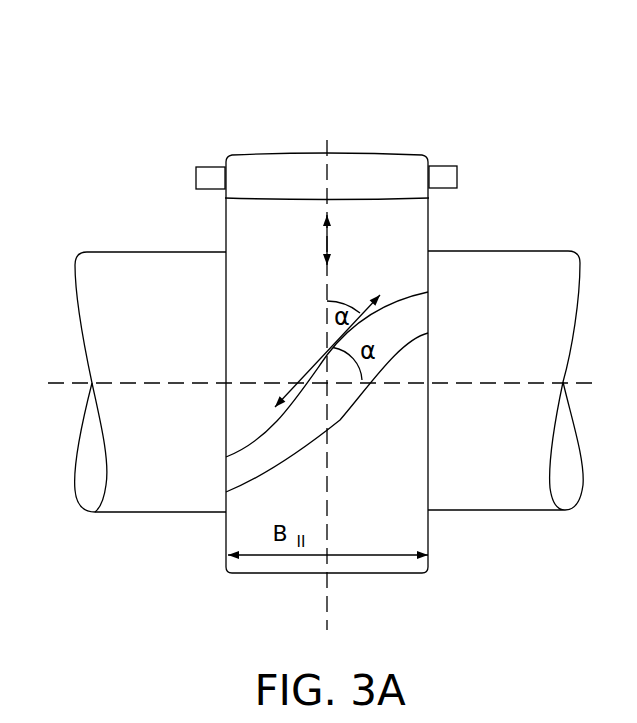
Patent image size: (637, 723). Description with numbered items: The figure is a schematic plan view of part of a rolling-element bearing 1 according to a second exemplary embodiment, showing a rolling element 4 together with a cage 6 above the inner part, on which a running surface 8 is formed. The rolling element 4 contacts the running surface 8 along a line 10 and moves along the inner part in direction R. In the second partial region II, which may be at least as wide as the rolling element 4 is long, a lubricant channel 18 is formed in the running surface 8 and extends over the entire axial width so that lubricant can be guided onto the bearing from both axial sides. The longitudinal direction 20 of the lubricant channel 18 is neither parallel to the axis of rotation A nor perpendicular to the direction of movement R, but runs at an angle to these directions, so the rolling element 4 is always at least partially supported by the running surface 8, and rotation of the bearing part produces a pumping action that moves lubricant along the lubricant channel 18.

The rolling-element bearing 1 is at (500, 67).
The rolling element 4 is at (403, 180).
The cage 6 is at (440, 177).
The running surface 8 is at (252, 240).
The line 10 is at (278, 197).
The lubricant channel 18 is at (387, 340).
The longitudinal direction 20 is at (306, 368).